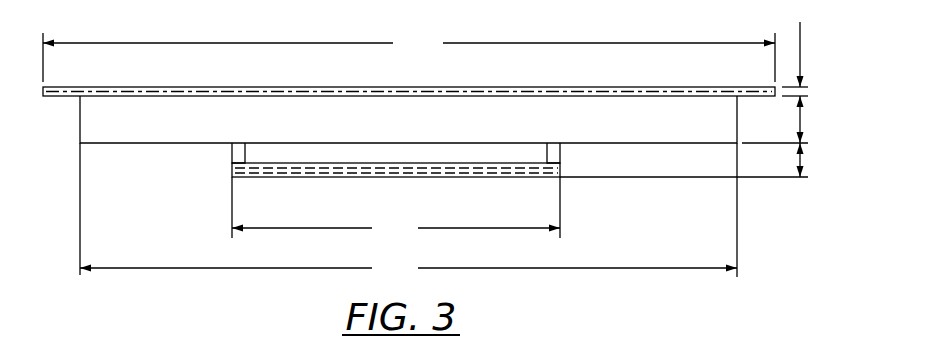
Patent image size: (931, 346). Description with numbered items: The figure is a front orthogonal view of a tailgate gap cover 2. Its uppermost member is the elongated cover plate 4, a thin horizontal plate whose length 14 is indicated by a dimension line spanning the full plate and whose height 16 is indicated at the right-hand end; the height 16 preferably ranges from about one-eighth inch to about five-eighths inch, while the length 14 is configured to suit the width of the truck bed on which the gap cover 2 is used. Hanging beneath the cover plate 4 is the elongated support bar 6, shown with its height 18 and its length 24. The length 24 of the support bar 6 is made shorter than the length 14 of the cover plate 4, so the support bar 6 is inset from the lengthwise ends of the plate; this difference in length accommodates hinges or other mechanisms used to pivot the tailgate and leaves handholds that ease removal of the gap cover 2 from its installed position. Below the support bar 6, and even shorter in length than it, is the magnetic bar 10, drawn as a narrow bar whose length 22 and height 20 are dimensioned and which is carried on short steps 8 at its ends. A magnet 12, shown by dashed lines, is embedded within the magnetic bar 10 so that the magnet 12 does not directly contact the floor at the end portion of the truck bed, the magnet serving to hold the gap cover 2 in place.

The tailgate gap cover 2 is at (144, 171).
The elongated cover plate 4 is at (145, 84).
The elongated support bar 6 is at (80, 118).
The support step 8 is at (233, 148).
The magnetic bar 10 is at (495, 179).
The magnet 12 is at (357, 175).
The length of the elongated cover plate 14 is at (406, 55).
The height of the elongated cover plate 16 is at (800, 35).
The height of the elongated support bar 18 is at (800, 118).
The bar height dimension 20 is at (803, 163).
The bar length dimension 22 is at (383, 240).
The length of the elongated support bar 24 is at (383, 280).